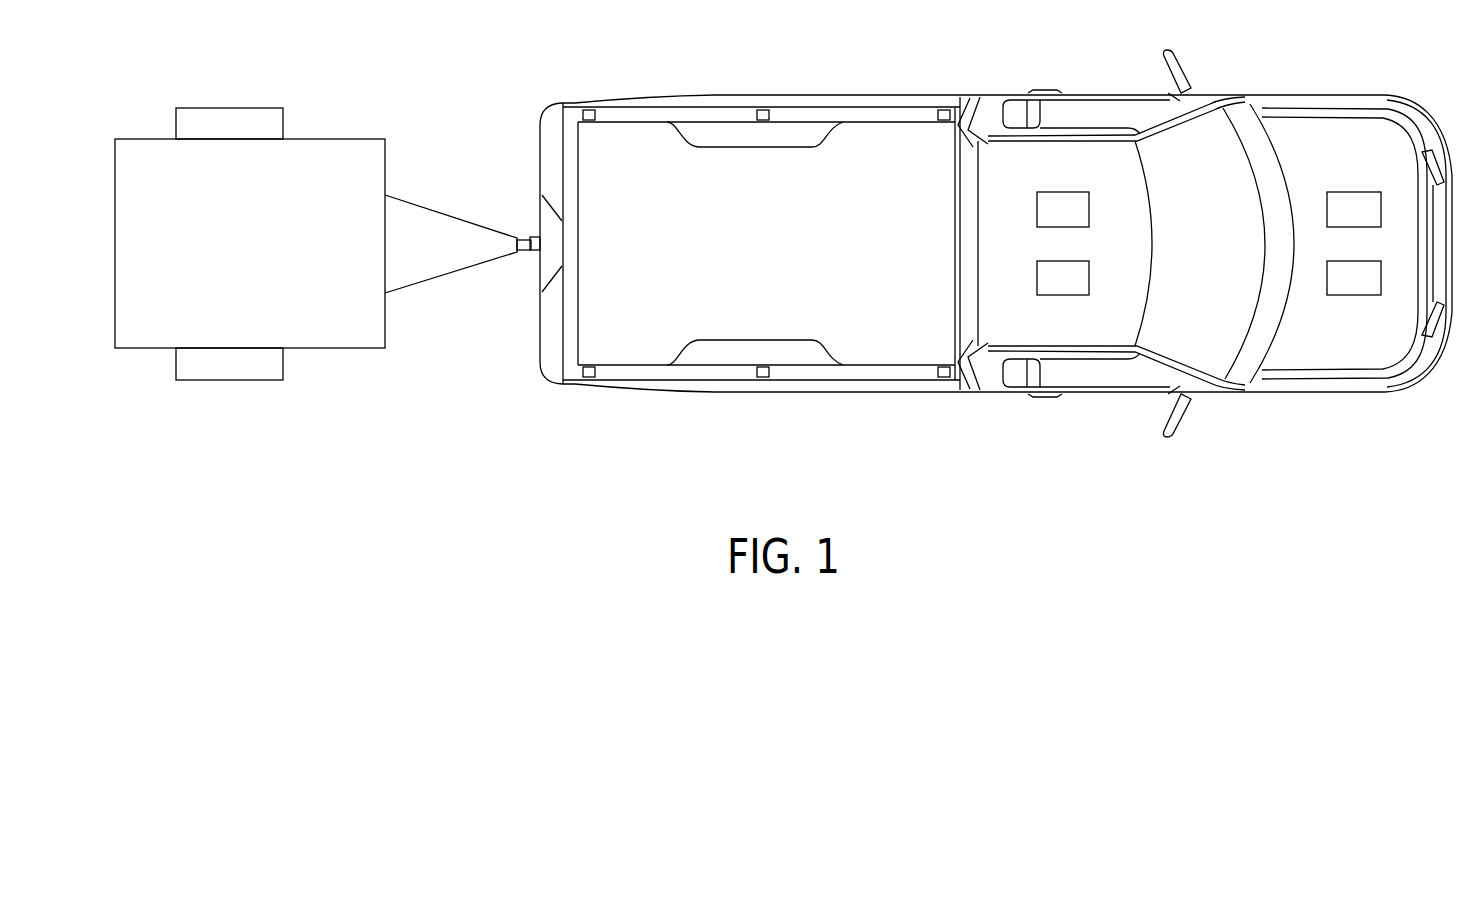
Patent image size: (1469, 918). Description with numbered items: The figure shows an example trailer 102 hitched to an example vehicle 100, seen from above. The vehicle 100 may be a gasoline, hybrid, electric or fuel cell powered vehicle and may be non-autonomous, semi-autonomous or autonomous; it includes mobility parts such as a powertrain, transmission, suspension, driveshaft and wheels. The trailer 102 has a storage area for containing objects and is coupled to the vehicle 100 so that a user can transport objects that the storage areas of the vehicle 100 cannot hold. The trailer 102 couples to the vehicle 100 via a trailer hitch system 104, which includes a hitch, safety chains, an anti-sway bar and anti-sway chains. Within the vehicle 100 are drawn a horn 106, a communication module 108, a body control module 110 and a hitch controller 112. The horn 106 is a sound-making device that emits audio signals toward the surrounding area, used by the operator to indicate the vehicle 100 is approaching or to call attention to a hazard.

The vehicle 100 is at (1100, 92).
The trailer 102 is at (330, 139).
The trailer hitch system 104 is at (461, 148).
The horn 106 is at (1372, 220).
The communication module 108 is at (1372, 289).
The body control module 110 is at (1082, 220).
The hitch controller 112 is at (1082, 289).